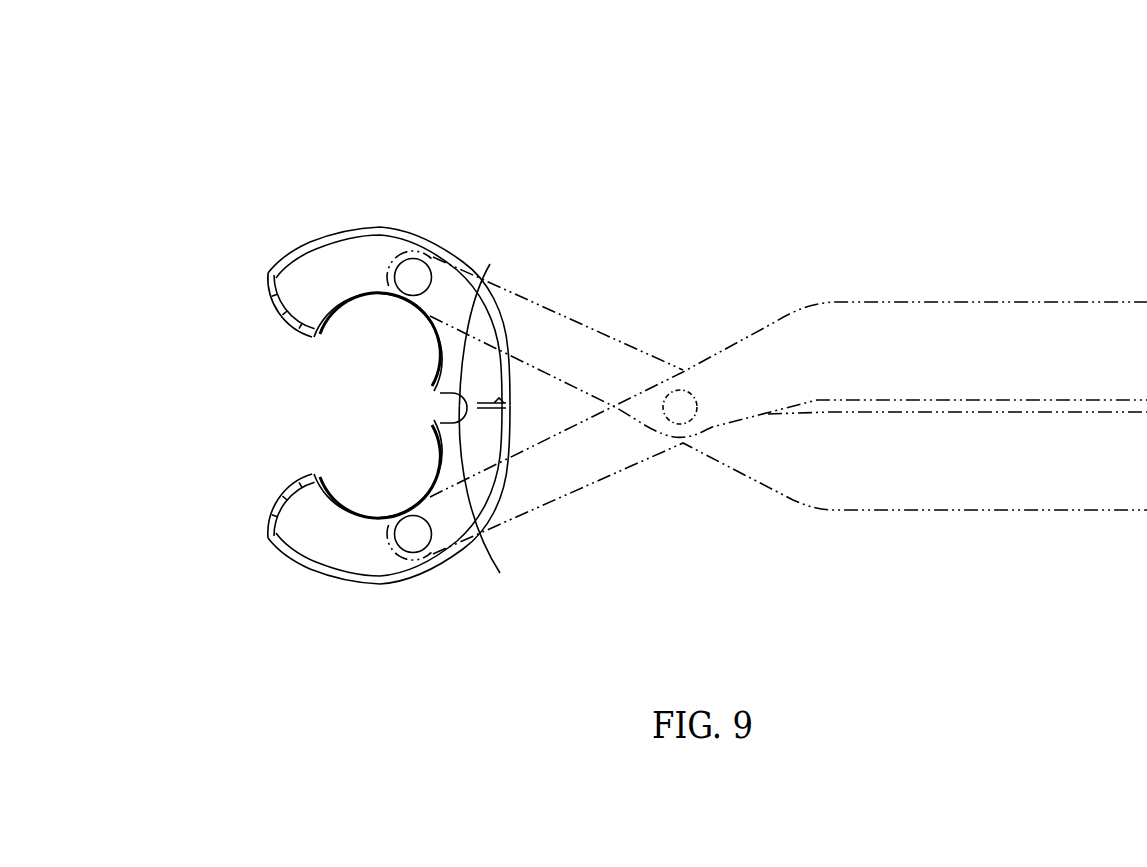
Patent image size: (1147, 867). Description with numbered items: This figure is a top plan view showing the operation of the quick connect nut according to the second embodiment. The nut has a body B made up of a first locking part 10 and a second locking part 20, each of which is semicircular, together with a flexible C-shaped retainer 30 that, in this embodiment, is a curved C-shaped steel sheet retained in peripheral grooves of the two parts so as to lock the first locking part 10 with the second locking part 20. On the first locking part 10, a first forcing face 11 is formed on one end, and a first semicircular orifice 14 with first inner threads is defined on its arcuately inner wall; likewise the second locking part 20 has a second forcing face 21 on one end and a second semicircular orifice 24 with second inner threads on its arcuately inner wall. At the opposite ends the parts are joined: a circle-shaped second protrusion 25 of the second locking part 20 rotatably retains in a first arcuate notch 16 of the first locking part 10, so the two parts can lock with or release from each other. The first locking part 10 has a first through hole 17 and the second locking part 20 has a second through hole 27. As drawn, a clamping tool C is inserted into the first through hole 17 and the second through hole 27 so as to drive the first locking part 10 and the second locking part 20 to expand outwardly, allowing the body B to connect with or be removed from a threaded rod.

The first locking part 10 is at (340, 553).
The second locking part 20 is at (340, 262).
The first forcing face 11 is at (277, 497).
The second forcing face 21 is at (268, 313).
The first semicircular orifice 14 is at (362, 510).
The second semicircular orifice 24 is at (380, 302).
The first through hole 17 is at (413, 540).
The second through hole 27 is at (413, 270).
The first arcuate notch 16 is at (494, 504).
The second protrusion 25 is at (490, 264).
The flexible C-shaped retainer 30 is at (506, 403).
The body B is at (207, 218).
The clamping tool C is at (884, 318).